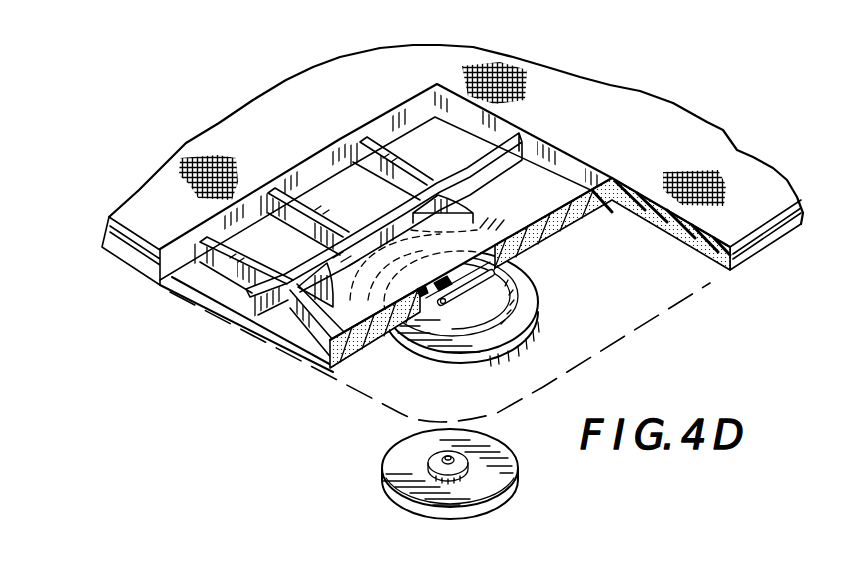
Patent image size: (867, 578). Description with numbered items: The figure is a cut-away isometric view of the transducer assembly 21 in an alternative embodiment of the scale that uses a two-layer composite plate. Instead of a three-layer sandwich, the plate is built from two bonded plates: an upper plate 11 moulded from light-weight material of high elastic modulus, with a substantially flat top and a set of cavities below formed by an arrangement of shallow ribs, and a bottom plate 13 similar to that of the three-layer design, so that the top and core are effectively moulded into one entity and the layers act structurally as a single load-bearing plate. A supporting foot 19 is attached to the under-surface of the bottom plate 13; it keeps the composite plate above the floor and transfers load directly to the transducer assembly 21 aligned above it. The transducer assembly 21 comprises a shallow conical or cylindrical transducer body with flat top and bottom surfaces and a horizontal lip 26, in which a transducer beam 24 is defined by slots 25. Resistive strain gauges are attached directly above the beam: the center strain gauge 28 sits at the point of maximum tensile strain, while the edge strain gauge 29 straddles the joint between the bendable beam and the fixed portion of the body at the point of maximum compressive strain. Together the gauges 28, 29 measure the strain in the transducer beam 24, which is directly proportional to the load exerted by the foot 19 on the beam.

The upper plate 11 is at (727, 223).
The bottom plate 13 is at (690, 232).
The supporting foot 19 is at (488, 512).
The transducer assembly 21 is at (477, 314).
The transducer beam 24 is at (517, 283).
The slots 25 is at (476, 290).
The horizontal lip 26 is at (440, 333).
The center strain gauge 28 is at (442, 282).
The edge strain gauge 29 is at (416, 291).